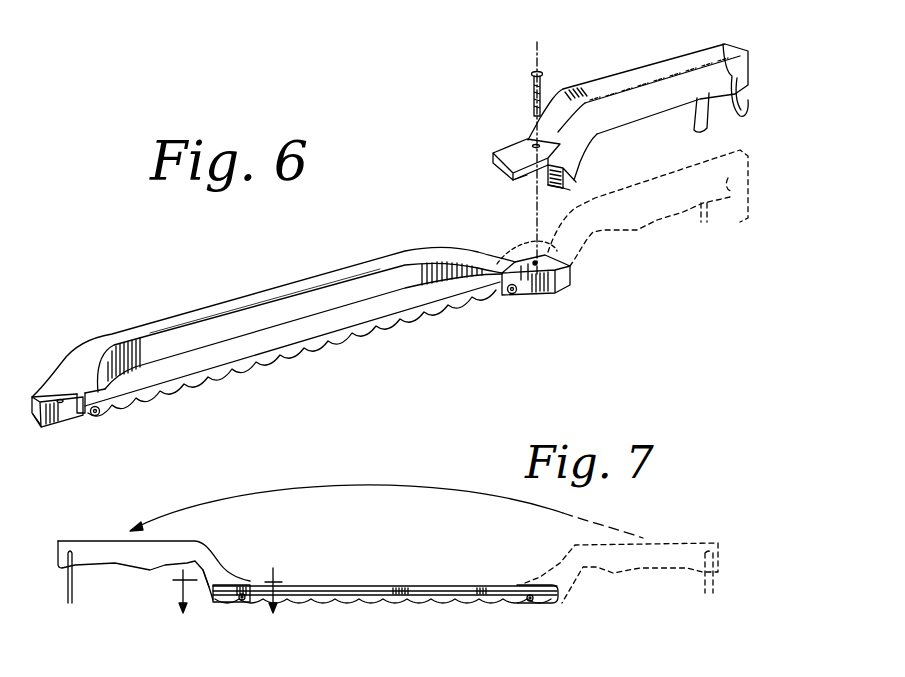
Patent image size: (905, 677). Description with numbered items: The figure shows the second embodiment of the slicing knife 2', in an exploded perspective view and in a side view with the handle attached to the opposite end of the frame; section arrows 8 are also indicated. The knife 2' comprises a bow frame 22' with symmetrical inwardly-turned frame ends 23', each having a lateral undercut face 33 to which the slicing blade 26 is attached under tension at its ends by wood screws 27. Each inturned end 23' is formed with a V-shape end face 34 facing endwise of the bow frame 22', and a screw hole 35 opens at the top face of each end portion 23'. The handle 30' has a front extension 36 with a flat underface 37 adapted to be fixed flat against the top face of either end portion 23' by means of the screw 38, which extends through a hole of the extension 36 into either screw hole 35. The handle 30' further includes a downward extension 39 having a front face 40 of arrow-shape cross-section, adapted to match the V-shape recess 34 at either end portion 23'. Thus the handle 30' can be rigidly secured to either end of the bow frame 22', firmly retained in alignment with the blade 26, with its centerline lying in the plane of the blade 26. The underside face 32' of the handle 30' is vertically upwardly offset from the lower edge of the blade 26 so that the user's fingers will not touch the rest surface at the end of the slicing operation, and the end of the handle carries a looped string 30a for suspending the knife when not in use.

In FIG. 6, the slicing knife 2' is at (273, 320).
In FIG. 7, the slicing knife 2' is at (385, 557).
In FIG. 6, the bow frame 22' is at (265, 276).
In FIG. 7, the bow frame 22' is at (385, 569).
In FIG. 6, the inwardly-turned frame end 23' is at (333, 334).
In FIG. 6, the slicing blade 26 is at (245, 365).
In FIG. 7, the slicing blade 26 is at (362, 599).
In FIG. 6, the wood screw 27 is at (99, 414).
In FIG. 7, the wood screw 27 is at (537, 594).
In FIG. 6, the handle 30' is at (638, 103).
In FIG. 7, the handle 30' is at (388, 588).
In FIG. 6, the looped string 30a is at (725, 70).
In FIG. 6, the underside face 32' is at (699, 126).
In FIG. 6, the lateral undercut face 33 is at (107, 387).
In FIG. 6, the V-shape end face 34 is at (36, 418).
In FIG. 6, the screw hole 35 is at (62, 404).
In FIG. 6, the front extension 36 is at (515, 152).
In FIG. 7, the front extension 36 is at (237, 578).
In FIG. 6, the flat underface 37 is at (527, 174).
In FIG. 6, the screw 38 is at (542, 92).
In FIG. 6, the downward extension 39 is at (570, 166).
In FIG. 7, the downward extension 39 is at (207, 596).
In FIG. 6, the front face 40 is at (560, 181).
In FIG. 7, the section line 8 is at (226, 586).